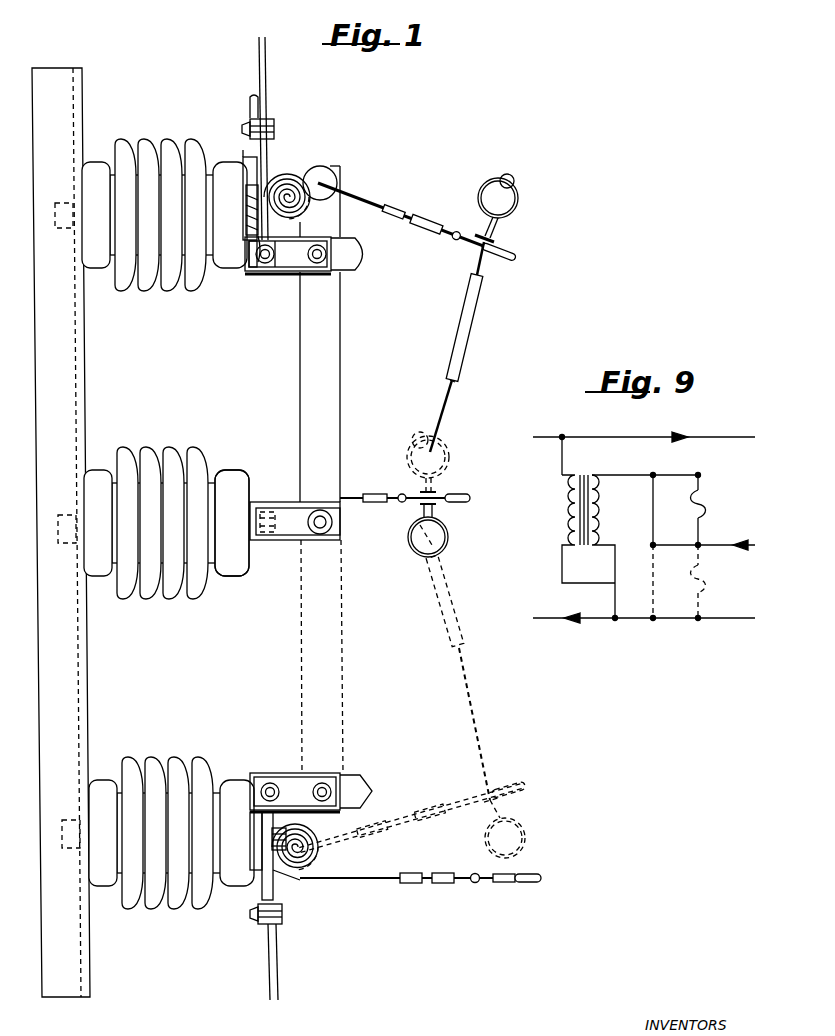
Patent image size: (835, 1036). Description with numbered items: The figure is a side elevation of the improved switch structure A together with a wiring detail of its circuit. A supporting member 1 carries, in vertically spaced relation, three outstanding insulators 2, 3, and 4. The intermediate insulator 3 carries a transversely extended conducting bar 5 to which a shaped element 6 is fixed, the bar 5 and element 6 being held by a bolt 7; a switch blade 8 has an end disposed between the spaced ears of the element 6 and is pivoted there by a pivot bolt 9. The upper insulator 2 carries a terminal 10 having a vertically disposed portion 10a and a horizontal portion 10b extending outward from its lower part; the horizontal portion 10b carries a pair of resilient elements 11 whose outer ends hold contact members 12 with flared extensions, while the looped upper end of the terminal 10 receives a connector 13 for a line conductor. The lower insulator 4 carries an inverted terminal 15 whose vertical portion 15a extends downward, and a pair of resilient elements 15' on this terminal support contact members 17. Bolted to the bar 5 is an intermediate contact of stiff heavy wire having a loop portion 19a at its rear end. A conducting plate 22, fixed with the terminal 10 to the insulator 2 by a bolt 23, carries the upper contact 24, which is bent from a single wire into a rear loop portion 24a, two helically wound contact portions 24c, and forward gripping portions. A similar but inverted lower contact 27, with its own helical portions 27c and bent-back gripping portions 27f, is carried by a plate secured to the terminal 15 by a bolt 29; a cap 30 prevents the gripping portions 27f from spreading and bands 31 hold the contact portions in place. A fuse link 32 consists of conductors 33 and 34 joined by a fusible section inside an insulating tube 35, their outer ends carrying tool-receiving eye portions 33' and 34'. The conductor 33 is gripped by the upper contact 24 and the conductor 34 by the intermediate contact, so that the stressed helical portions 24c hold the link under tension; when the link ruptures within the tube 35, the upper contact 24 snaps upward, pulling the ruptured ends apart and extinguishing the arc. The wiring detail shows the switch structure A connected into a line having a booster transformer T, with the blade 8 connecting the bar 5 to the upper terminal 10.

In FIG. 1, the supporting member 1 is at (82, 397).
In FIG. 1, the insulator 2 is at (170, 286).
In FIG. 1, the insulator 3 is at (172, 599).
In FIG. 1, the insulator 4 is at (176, 910).
In FIG. 1, the bar 5 is at (247, 523).
In FIG. 9, the bar 5 is at (672, 546).
In FIG. 1, the element 6 is at (292, 536).
In FIG. 1, the bolt 7 is at (270, 533).
In FIG. 1, the switch blade 8 is at (300, 377).
In FIG. 9, the switch blade 8 is at (654, 508).
In FIG. 1, the pivot bolt 9 is at (320, 533).
In FIG. 1, the terminal 10 is at (259, 172).
In FIG. 9, the terminal 10 is at (660, 473).
In FIG. 1, the vertically disposed portion 10a is at (243, 160).
In FIG. 1, the horizontal portion 10b is at (270, 272).
In FIG. 1, the resilient elements 11 is at (296, 262).
In FIG. 1, the contact members 12 is at (358, 262).
In FIG. 1, the connector 13 is at (246, 126).
In FIG. 1, the terminal 15 is at (247, 906).
In FIG. 9, the terminal 15 is at (650, 632).
In FIG. 1, the resilient elements 15' is at (295, 776).
In FIG. 1, the vertical portion 15a is at (278, 880).
In FIG. 1, the contact members 17 is at (362, 781).
In FIG. 1, the loop portion 19a is at (260, 500).
In FIG. 1, the plate 22 is at (246, 198).
In FIG. 1, the bolt 23 is at (276, 262).
In FIG. 1, the upper contact 24 is at (383, 201).
In FIG. 9, the upper contact 24 is at (698, 472).
In FIG. 1, the loop portion 24a is at (258, 240).
In FIG. 1, the helically wound contact portions 24c is at (300, 176).
In FIG. 1, the lower contact 27 is at (396, 886).
In FIG. 9, the lower contact 27 is at (699, 621).
In FIG. 1, the helically wound contact portions 27c is at (325, 846).
In FIG. 1, the gripping portions 27f is at (505, 885).
In FIG. 1, the bolt 29 is at (272, 835).
In FIG. 1, the cap 30 is at (536, 877).
In FIG. 1, the bands 31 is at (440, 885).
In FIG. 1, the fuse link 32 is at (466, 367).
In FIG. 9, the fuse link 32 is at (704, 513).
In FIG. 1, the conductor 33 is at (495, 268).
In FIG. 1, the eye portion 33' is at (513, 208).
In FIG. 1, the conductor 34 is at (446, 436).
In FIG. 1, the eye portion 34' is at (455, 681).
In FIG. 1, the tube 35 is at (470, 323).
In FIG. 1, the switch structure A is at (350, 191).
In FIG. 9, the switch structure A is at (712, 496).
In FIG. 9, the transformer T is at (558, 515).